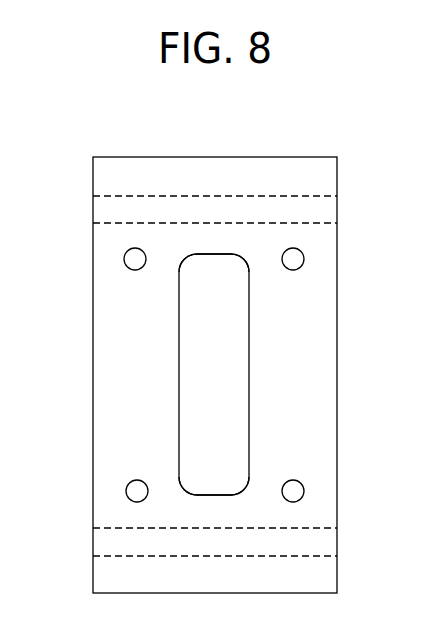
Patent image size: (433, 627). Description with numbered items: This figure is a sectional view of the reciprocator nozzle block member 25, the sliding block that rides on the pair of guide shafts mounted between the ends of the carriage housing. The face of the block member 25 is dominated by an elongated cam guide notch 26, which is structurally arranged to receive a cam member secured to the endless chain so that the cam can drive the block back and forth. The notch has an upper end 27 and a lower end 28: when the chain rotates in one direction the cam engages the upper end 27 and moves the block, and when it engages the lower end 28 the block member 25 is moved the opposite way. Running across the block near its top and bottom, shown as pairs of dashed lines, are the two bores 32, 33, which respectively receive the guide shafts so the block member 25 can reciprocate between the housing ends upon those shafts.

The reciprocator nozzle block member 25 is at (310, 415).
The cam guide notch 26 is at (224, 377).
The upper end of cam guide notch 27 is at (246, 263).
The lower end of cam guide notch 28 is at (235, 481).
The bore 32 is at (246, 196).
The bore 33 is at (125, 527).